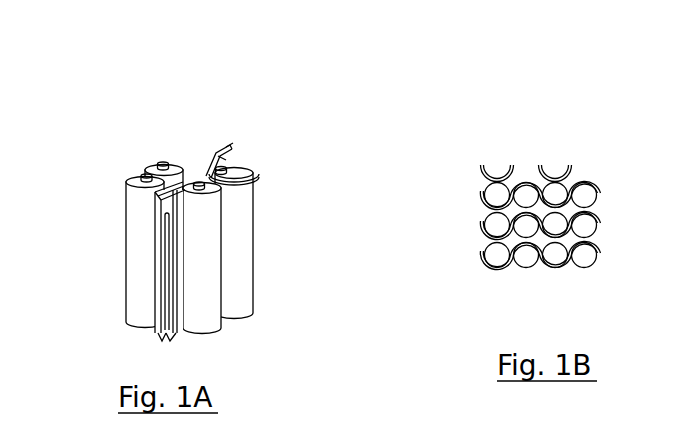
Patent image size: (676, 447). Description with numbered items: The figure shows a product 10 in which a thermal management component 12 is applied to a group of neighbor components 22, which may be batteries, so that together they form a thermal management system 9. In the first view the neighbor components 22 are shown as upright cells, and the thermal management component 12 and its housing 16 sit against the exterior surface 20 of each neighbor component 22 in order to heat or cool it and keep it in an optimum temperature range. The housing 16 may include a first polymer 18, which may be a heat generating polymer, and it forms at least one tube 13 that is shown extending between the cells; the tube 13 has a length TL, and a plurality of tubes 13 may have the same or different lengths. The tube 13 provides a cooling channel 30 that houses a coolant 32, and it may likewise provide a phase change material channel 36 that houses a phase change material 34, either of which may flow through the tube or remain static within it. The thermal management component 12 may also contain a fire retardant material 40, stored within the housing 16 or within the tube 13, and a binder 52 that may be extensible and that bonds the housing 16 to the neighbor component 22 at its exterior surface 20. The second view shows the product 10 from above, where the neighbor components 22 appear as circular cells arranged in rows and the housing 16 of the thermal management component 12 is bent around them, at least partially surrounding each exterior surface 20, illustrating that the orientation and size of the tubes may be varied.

In FIG. 1A, the system 9 is at (207, 63).
In FIG. 1A, the product 10 is at (318, 115).
In FIG. 1B, the product 10 is at (607, 150).
In FIG. 1A, the thermal management component 12 is at (248, 195).
In FIG. 1B, the thermal management component 12 is at (581, 182).
In FIG. 1A, the tube 13 is at (157, 225).
In FIG. 1A, the housing 16 is at (213, 148).
In FIG. 1B, the housing 16 is at (600, 191).
In FIG. 1A, the first polymer 18 is at (228, 158).
In FIG. 1A, the exterior surface 20 is at (153, 167).
In FIG. 1B, the exterior surface 20 is at (602, 262).
In FIG. 1A, the neighbor component 22 is at (172, 163).
In FIG. 1B, the neighbor component 22 is at (498, 196).
In FIG. 1A, the cooling channel 30 is at (158, 287).
In FIG. 1A, the coolant 32 is at (158, 243).
In FIG. 1A, the phase change material 34 is at (160, 318).
In FIG. 1A, the phase change material channel 36 is at (175, 336).
In FIG. 1A, the fire retardant material 40 is at (160, 202).
In FIG. 1A, the binder 52 is at (257, 178).
In FIG. 1A, the tube length TL is at (224, 152).